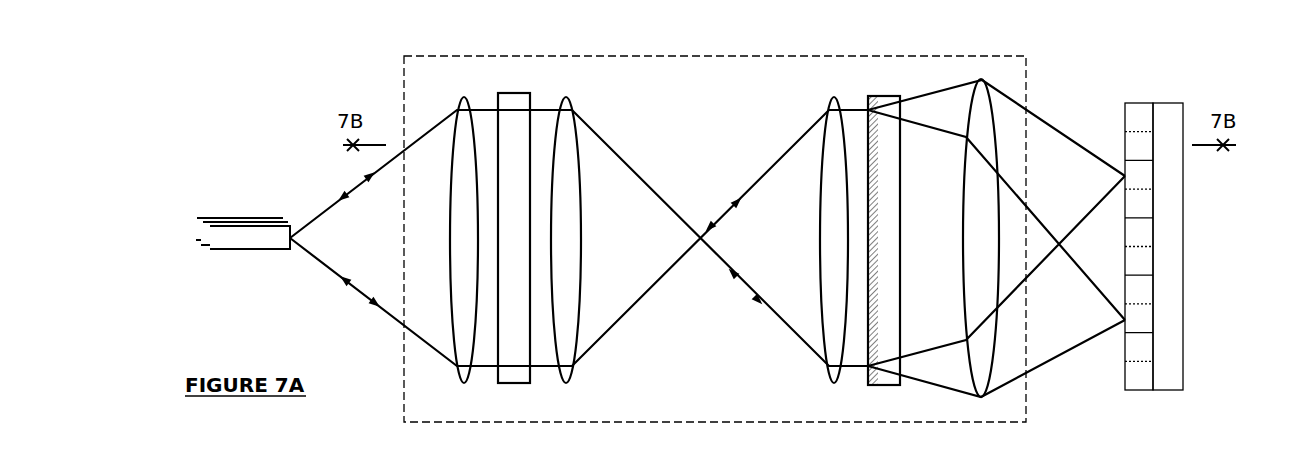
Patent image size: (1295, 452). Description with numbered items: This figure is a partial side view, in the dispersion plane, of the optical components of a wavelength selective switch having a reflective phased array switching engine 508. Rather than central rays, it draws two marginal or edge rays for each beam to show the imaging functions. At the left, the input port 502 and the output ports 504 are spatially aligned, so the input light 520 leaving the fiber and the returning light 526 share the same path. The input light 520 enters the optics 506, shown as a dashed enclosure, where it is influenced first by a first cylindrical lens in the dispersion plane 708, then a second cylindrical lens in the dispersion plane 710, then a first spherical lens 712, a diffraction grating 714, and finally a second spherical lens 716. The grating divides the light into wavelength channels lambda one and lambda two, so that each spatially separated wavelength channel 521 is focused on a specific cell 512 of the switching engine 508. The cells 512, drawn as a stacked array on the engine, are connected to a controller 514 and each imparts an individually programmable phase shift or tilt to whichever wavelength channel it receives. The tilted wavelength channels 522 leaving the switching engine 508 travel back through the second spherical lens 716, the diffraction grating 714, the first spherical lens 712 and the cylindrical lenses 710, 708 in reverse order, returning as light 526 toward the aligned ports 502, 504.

The input port 502 is at (206, 201).
The array of output ports 504 is at (247, 228).
The optics 506 is at (402, 103).
The phased array switching engine 508 is at (1200, 221).
The cell 512 is at (1153, 320).
The controller 514 is at (1183, 207).
The input light 520 is at (524, 229).
The return light beam 526 is at (315, 222).
The spatially separated wavelength channel 521 is at (1026, 228).
The wanted diffraction order 522 is at (1090, 148).
The first cylindrical lens in the dispersion plane 708 is at (463, 98).
The second cylindrical lens in the dispersion plane 710 is at (566, 98).
The first spherical lens 712 is at (833, 98).
The diffraction grating 714 is at (882, 95).
The second spherical lens 716 is at (982, 80).